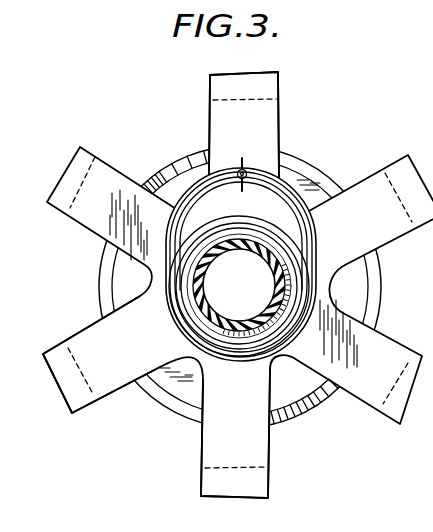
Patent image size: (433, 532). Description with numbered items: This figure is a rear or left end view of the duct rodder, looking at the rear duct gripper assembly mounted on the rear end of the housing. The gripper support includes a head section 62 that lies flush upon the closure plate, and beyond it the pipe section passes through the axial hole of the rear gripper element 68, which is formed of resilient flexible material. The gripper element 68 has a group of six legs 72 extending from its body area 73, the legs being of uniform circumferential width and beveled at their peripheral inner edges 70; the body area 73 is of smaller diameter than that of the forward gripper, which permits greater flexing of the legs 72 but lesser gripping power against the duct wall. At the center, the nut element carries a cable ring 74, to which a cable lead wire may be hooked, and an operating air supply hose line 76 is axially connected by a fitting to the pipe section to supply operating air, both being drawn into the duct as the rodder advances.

The head section 62 is at (100, 270).
The gripper element 68 is at (281, 129).
The peripheral inner edges 70 is at (218, 90).
The legs 72 is at (203, 435).
The body area 73 is at (281, 362).
The cable ring 74 is at (289, 183).
The operating air supply hose line 76 is at (240, 330).